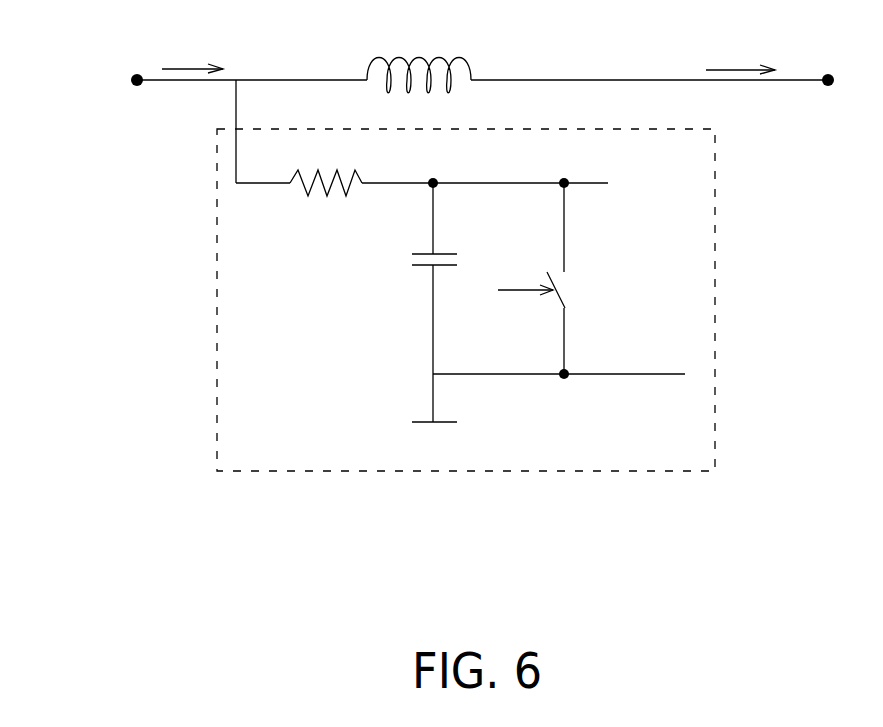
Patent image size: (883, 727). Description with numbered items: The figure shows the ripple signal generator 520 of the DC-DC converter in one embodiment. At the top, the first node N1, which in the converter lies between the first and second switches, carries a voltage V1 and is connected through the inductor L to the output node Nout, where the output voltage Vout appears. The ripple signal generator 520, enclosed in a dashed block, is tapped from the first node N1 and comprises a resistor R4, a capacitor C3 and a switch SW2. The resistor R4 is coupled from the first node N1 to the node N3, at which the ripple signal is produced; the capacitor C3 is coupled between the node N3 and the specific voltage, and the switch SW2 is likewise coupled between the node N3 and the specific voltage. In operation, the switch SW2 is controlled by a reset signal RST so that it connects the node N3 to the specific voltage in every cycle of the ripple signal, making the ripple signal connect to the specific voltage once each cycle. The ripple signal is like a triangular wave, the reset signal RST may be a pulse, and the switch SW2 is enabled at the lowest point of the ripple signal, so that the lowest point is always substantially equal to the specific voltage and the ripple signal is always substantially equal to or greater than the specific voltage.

The ripple signal generator 520 is at (715, 220).
The first node N1 is at (133, 65).
The first voltage V1 is at (192, 58).
The inductor L is at (419, 61).
The output voltage Vout is at (740, 58).
The output node Nout is at (828, 65).
The resistor R4 is at (326, 169).
The node N3 is at (432, 170).
The capacitor C3 is at (416, 278).
The switch SW2 is at (568, 289).
The reset signal RST is at (514, 303).